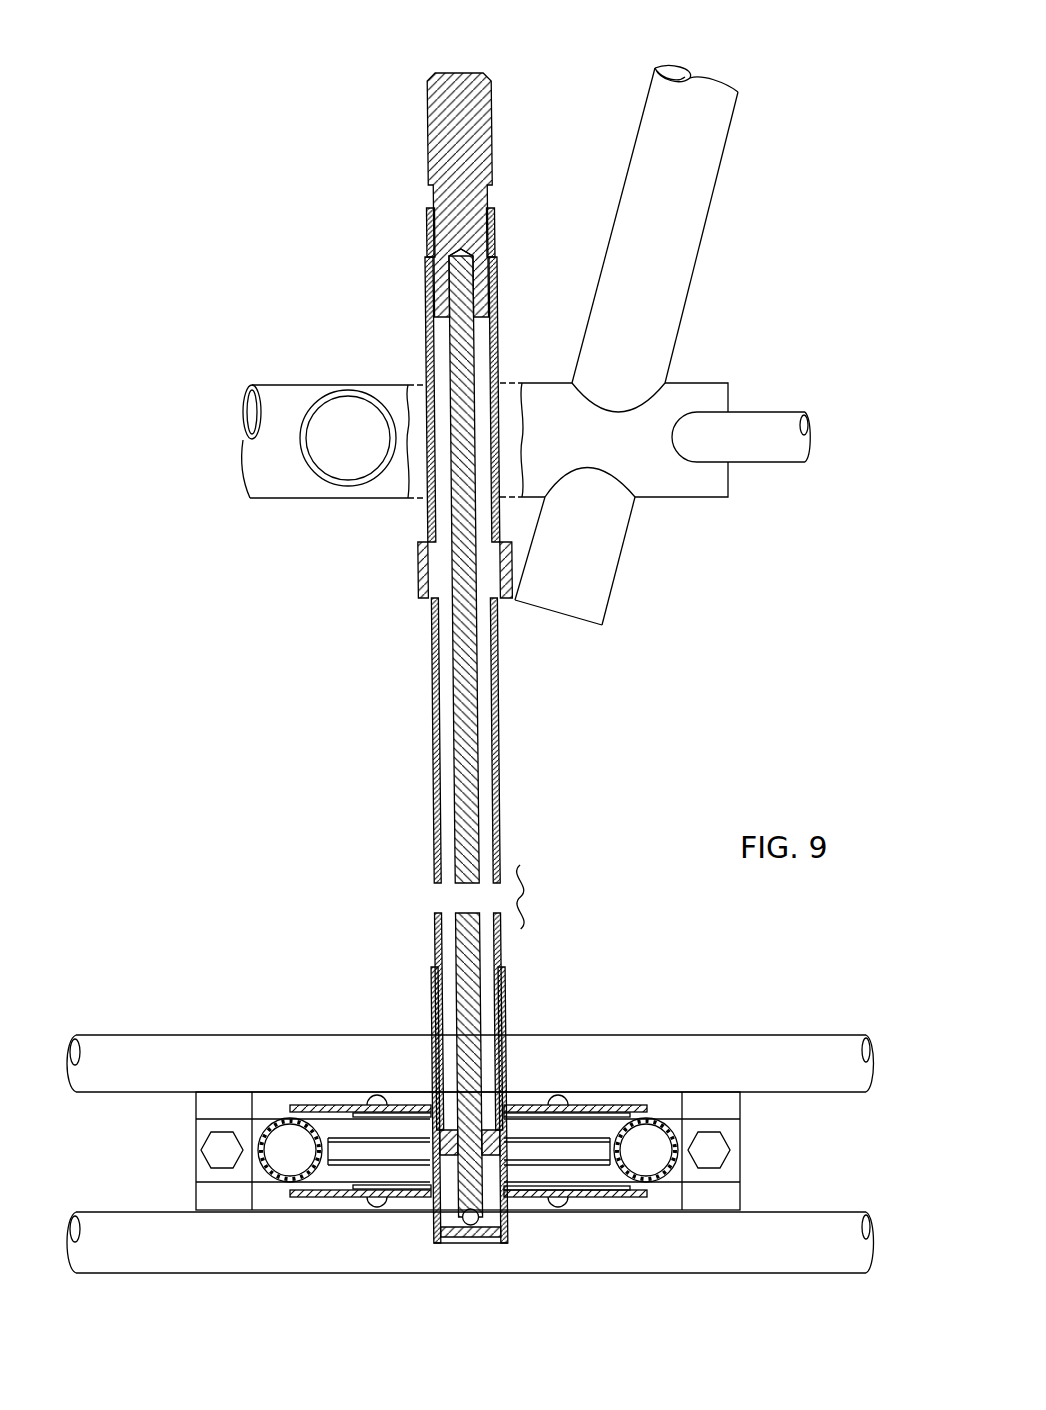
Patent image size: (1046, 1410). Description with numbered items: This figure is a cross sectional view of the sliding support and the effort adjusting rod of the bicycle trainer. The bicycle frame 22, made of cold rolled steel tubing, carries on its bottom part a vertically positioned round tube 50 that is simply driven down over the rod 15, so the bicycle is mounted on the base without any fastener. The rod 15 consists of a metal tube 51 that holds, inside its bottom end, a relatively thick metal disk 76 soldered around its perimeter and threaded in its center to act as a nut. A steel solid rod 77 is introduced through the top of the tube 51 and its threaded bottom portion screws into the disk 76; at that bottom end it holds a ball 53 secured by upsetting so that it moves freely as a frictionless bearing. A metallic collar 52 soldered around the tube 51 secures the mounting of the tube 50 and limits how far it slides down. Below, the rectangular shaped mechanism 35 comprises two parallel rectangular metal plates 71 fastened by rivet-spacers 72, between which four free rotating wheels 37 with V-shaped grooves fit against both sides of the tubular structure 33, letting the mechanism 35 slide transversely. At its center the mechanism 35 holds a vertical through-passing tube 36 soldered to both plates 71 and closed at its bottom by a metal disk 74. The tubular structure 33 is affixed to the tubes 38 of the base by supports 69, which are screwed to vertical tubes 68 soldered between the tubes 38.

The rod 15 is at (487, 74).
The steel solid rod 77 is at (465, 135).
The round tube 50 is at (423, 283).
The metallic collar 52 is at (414, 570).
The metal tube 51 is at (500, 720).
The vertical through-passing tube 36 is at (509, 990).
The metal disk 76 is at (452, 1142).
The metal disk 74 is at (472, 1226).
The ball 53 is at (490, 1240).
The frame 22 is at (706, 381).
The tubes 38 is at (843, 1035).
The tubes 68 is at (723, 1198).
The supports 69 is at (744, 1170).
The tubular structure 33 is at (681, 1128).
The free rotating wheels 37 is at (345, 1150).
The rectangular shaped mechanism 35 is at (643, 1100).
The rivet-spacers 72 is at (372, 1098).
The rectangular metal plates 71 is at (600, 1102).